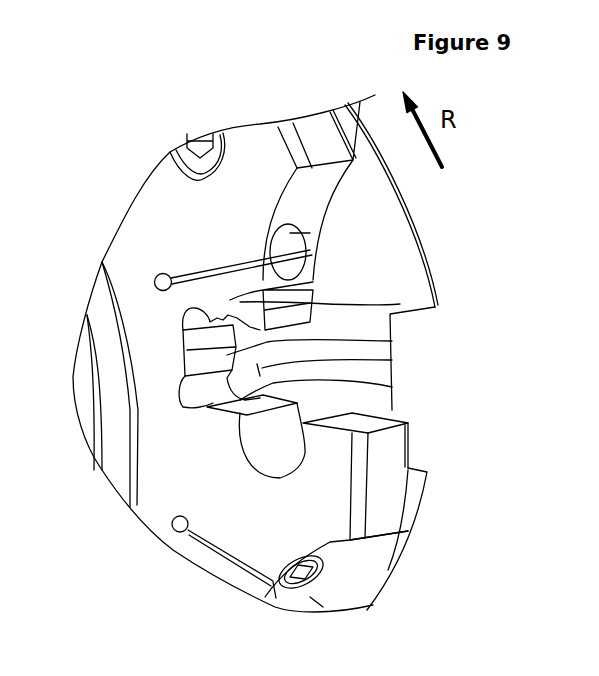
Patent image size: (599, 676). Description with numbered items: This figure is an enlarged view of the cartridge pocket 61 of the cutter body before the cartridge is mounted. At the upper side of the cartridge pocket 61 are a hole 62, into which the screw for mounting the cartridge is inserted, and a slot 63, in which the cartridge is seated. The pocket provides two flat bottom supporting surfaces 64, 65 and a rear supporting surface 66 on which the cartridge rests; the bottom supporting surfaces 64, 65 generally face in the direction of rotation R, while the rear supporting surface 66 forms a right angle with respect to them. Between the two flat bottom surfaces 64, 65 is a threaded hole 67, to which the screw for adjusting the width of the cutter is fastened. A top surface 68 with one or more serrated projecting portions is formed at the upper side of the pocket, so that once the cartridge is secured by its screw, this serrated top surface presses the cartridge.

The cartridge pocket 61 is at (392, 360).
The hole 62 is at (295, 233).
The slot 63 is at (205, 282).
The bottom supporting surface 64 is at (392, 410).
The bottom supporting surface 65 is at (392, 387).
The rear supporting surface 66 is at (392, 341).
The threaded hole 67 is at (263, 451).
The top surface 68 is at (400, 304).